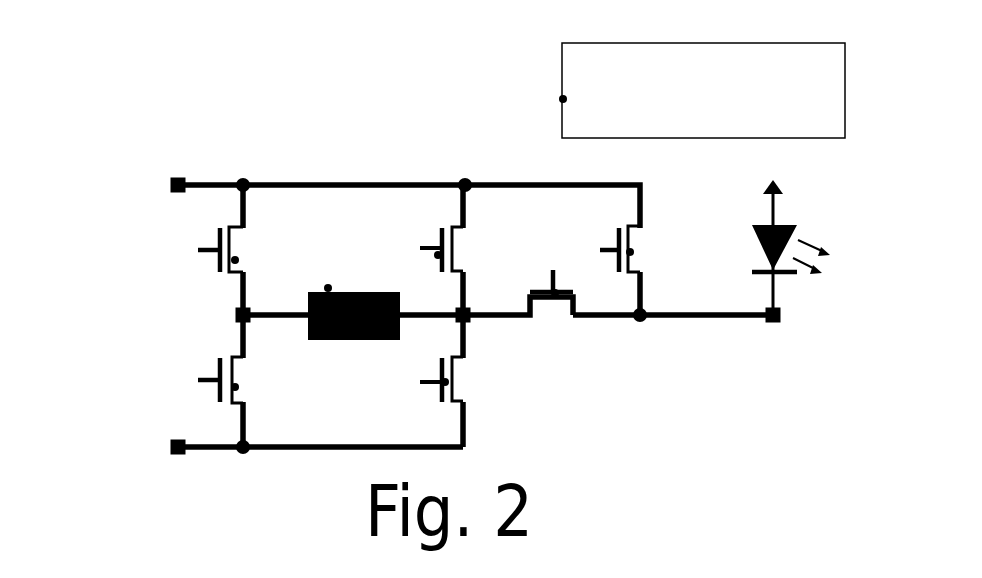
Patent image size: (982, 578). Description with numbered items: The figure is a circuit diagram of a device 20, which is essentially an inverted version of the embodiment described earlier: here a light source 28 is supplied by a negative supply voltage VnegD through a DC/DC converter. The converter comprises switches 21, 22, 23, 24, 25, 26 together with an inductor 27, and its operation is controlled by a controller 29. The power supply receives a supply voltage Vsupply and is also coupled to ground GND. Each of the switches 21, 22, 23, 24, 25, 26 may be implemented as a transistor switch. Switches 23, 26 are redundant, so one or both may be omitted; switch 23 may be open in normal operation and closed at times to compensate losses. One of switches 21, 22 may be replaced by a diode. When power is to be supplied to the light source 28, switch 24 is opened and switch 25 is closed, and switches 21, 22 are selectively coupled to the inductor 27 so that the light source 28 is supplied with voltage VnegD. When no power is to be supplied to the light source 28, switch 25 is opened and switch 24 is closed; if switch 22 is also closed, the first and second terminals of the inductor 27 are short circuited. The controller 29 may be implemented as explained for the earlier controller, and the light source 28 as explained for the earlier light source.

The device 20 is at (227, 158).
The switch 21 is at (238, 259).
The switch 22 is at (238, 386).
The switch 23 is at (441, 253).
The switch 24 is at (448, 382).
The switch 25 is at (556, 297).
The switch 26 is at (633, 252).
The inductor 27 is at (330, 286).
The light source 28 is at (757, 227).
The controller 29 is at (560, 100).